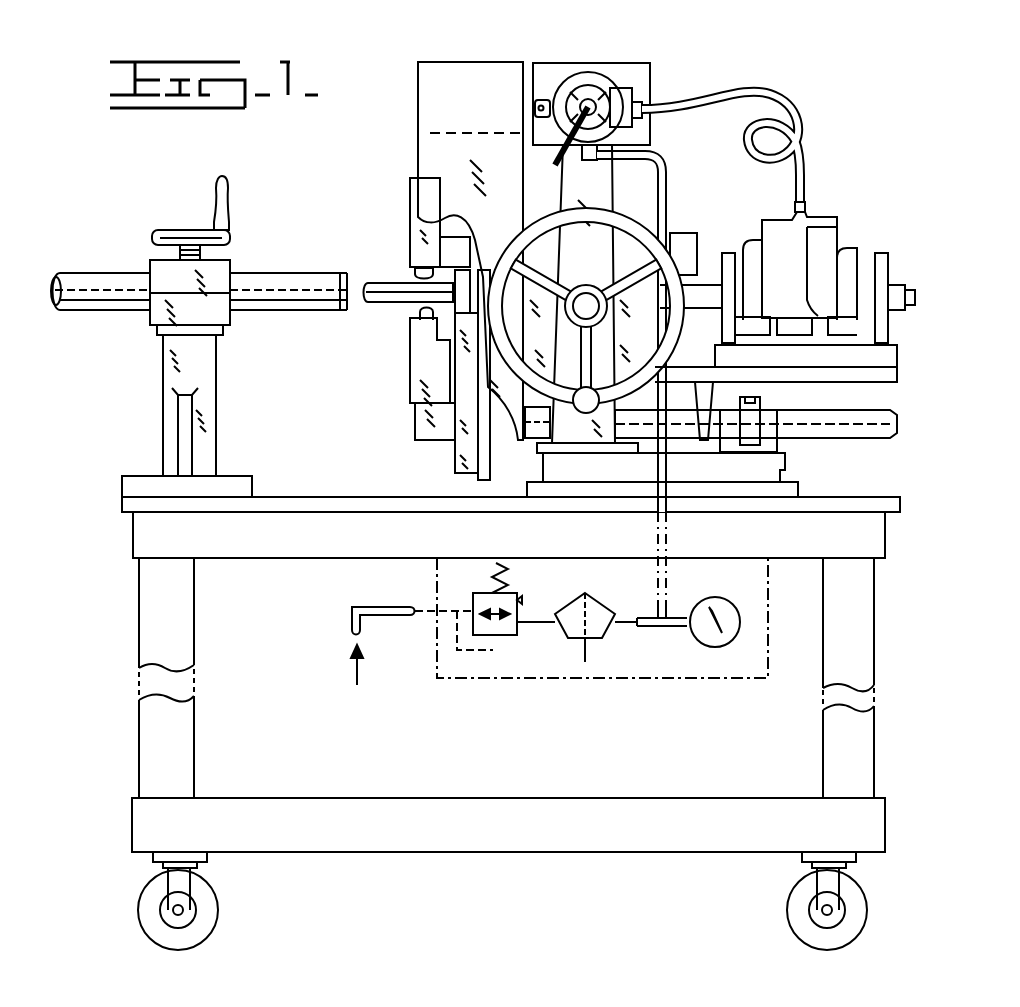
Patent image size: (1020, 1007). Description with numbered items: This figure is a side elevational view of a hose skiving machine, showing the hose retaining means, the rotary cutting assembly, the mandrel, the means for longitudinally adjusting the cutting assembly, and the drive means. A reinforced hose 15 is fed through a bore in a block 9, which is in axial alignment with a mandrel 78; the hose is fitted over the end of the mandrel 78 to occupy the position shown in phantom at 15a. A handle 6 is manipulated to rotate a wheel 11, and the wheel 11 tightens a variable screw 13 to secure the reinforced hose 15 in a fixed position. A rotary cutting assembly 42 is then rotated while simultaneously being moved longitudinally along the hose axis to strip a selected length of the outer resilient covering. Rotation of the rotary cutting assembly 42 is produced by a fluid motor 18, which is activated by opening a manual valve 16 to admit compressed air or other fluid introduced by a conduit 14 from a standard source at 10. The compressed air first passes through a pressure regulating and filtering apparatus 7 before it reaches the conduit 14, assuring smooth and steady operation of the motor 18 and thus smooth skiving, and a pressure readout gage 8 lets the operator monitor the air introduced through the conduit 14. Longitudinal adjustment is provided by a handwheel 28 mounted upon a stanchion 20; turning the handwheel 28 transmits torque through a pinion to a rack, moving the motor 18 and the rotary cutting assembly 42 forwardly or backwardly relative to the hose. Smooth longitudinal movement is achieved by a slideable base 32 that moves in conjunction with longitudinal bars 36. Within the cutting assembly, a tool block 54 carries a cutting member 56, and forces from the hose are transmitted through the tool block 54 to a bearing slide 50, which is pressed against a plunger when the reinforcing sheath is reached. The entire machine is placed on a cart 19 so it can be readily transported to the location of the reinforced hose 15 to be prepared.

The handle 6 is at (220, 178).
The pressure regulating and filtering apparatus 7 is at (518, 598).
The pressure readout gage 8 is at (726, 602).
The block 9 is at (152, 314).
The standard source 10 is at (668, 58).
The wheel 11 is at (186, 236).
The variable screw 13 is at (180, 256).
The conduit 14 is at (660, 582).
The reinforced hose 15 is at (240, 282).
The phantom position of reinforced hose 15a is at (362, 306).
The manual valve 16 is at (590, 90).
The fluid motor 18 is at (820, 236).
The cart 19 is at (132, 600).
The stanchion 20 is at (600, 194).
The handwheel 28 is at (606, 222).
The slideable base 32 is at (852, 370).
The longitudinal bars 36 is at (856, 428).
The rotary cutting assembly 42 is at (412, 106).
The bearing slide 50 is at (458, 460).
The tool block 54 is at (410, 192).
The cutting member 56 is at (416, 318).
The mandrel 78 is at (386, 290).